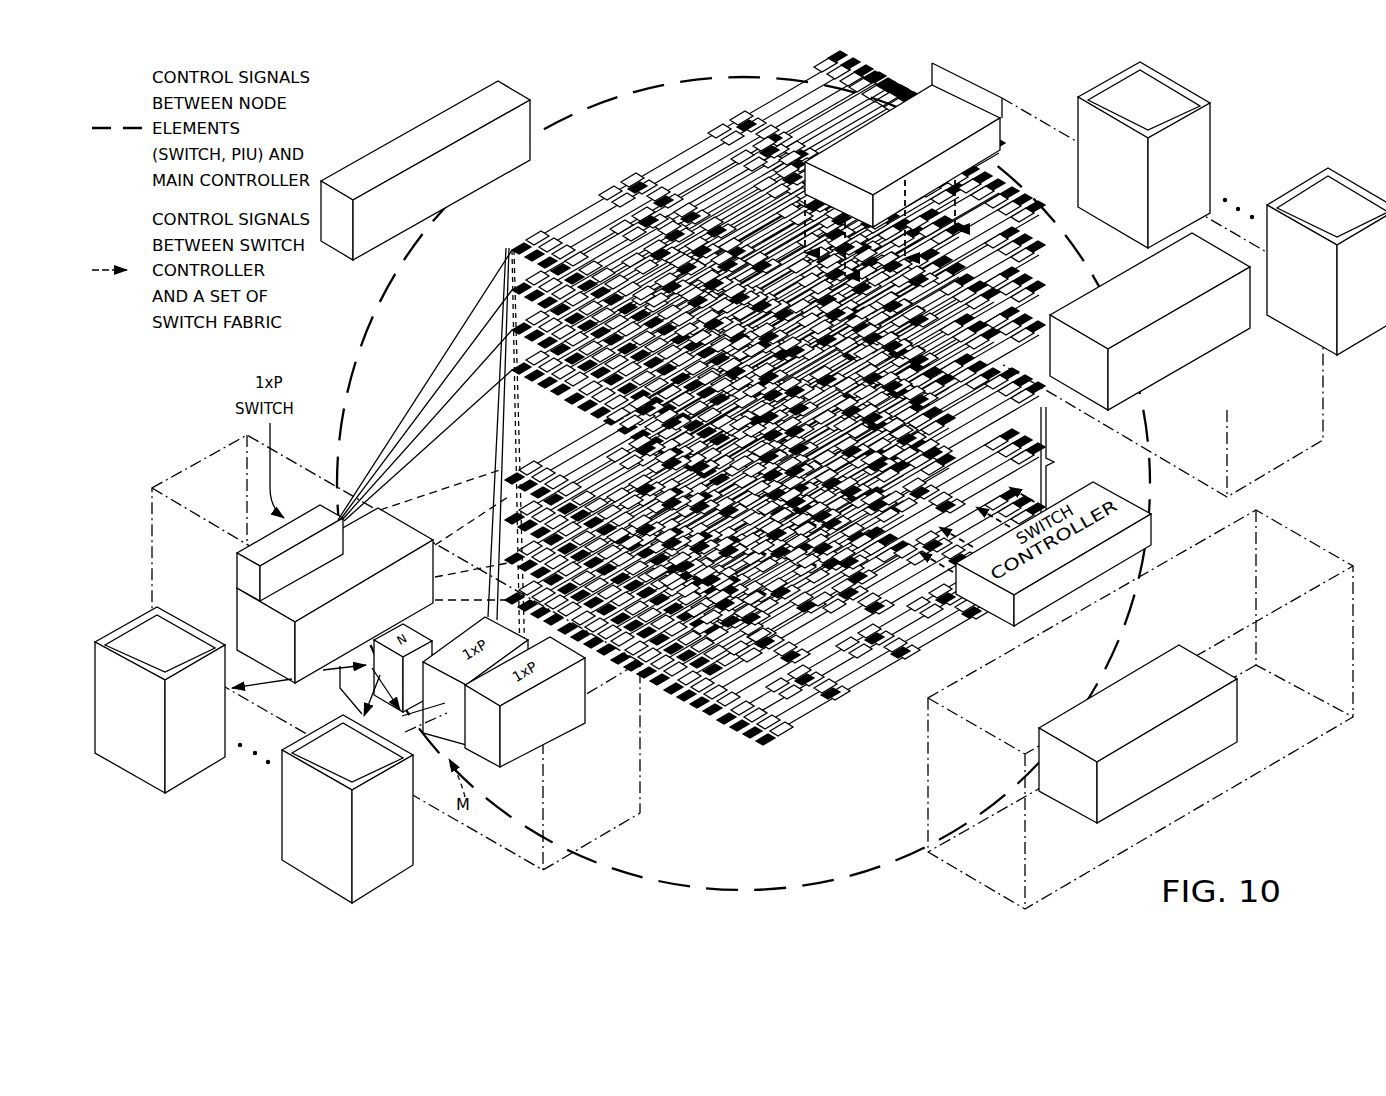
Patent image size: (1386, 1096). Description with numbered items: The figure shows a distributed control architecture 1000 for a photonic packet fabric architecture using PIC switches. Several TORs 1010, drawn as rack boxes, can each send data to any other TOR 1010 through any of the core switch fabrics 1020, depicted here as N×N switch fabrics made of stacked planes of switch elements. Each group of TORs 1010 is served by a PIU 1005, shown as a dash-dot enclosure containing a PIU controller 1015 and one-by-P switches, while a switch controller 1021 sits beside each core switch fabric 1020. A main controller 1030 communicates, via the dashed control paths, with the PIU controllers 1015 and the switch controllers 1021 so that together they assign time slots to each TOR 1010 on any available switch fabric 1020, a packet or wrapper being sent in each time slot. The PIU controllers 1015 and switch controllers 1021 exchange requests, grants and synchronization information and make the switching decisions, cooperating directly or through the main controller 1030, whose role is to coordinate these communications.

The distributed control architecture 1000 is at (555, 105).
The PIU 1005 is at (1333, 482).
The TOR 1010 is at (198, 760).
The PIU controller 1015 is at (247, 616).
The core switch fabric 1020 is at (642, 175).
The switch controller 1021 is at (965, 103).
The main controller 1030 is at (413, 130).